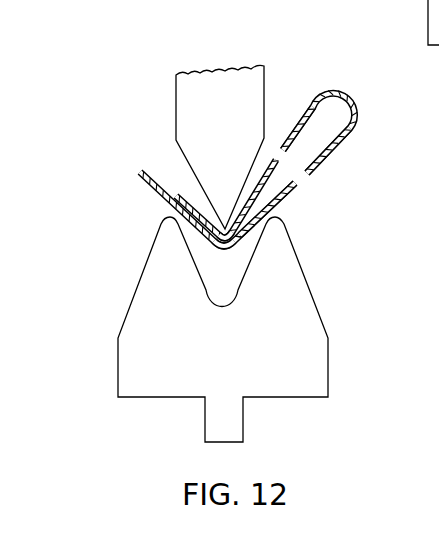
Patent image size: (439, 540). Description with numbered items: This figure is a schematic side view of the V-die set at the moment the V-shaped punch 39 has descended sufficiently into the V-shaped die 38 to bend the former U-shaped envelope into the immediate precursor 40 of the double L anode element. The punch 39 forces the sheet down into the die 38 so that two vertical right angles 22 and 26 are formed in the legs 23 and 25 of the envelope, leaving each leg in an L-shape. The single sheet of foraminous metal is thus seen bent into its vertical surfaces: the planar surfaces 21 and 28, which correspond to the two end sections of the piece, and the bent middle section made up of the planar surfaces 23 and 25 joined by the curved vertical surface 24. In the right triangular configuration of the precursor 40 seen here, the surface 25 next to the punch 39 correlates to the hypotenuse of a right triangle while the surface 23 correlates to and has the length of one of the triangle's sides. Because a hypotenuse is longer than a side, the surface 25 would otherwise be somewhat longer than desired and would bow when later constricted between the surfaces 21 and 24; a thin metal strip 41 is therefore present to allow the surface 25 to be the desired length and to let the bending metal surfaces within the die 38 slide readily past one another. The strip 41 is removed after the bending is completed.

The vertical planar surface 21 is at (156, 193).
The vertical right angle 22 is at (218, 257).
The vertical planar surface 23 is at (323, 161).
The curved vertical surface 24 is at (333, 92).
The vertical planar surface 25 is at (294, 124).
The vertical right angle 26 is at (228, 226).
The vertical planar surface 28 is at (182, 190).
The V-shaped die 38 is at (118, 363).
The V-shaped punch 39 is at (176, 90).
The precursor of anode element 40 is at (327, 54).
The thin metal strip 41 is at (270, 208).